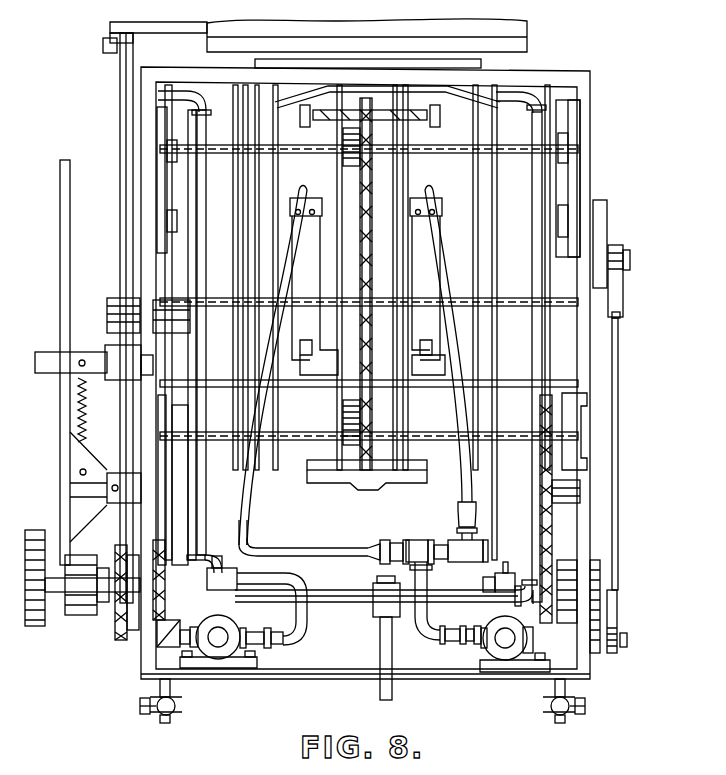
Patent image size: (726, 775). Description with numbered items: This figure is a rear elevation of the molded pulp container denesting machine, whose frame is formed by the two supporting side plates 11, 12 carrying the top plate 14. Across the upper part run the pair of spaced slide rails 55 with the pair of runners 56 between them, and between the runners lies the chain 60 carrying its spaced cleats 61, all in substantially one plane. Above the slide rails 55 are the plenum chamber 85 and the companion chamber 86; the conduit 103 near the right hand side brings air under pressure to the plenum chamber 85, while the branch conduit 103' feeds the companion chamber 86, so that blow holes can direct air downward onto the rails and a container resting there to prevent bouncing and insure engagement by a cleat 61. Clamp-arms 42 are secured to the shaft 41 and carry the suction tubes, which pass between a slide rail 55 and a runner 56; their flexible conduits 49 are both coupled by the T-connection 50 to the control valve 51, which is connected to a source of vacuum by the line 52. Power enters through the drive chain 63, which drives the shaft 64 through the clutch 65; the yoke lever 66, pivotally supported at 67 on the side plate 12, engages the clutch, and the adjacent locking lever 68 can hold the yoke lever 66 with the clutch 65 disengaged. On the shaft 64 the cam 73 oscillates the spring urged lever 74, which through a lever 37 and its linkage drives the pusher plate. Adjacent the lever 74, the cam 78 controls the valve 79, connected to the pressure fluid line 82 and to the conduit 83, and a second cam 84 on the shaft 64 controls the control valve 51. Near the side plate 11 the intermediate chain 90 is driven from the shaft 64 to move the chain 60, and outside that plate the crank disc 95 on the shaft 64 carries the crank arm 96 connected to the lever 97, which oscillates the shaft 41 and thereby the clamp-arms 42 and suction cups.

The top plate 14 is at (524, 82).
The lever 37 is at (122, 118).
The branch conduit 103' is at (387, 109).
The slide rails 55 is at (245, 186).
The shaft 41 is at (512, 225).
The chain 60 is at (366, 470).
The cleats 61 is at (324, 476).
The clamp-arm 42 is at (314, 312).
The runners 56 is at (318, 186).
The companion chamber 86 is at (230, 167).
The conduit 103 is at (535, 347).
The plenum chamber 85 is at (510, 170).
The lever 97 is at (606, 250).
The crank arm 96 is at (620, 462).
The crank disc 95 is at (612, 576).
The side plate 11 is at (582, 515).
The chain 90 is at (550, 540).
The yoke lever 66 is at (64, 425).
The locking lever 68 is at (42, 358).
The side plate 12 is at (145, 384).
The pivot 67 is at (115, 485).
The lever 74 is at (173, 518).
The cam 78 is at (226, 556).
The conduit 83 is at (253, 563).
The T-connection 50 is at (422, 540).
The flexible conduit 49 is at (244, 503).
The shaft 64 is at (343, 600).
The valve 79 is at (232, 608).
The control valve 51 is at (505, 668).
The cam 84 is at (508, 568).
The line 82 is at (172, 690).
The line 52 is at (558, 694).
The clutch 65 is at (110, 612).
The drive chain 63 is at (122, 638).
The cam 73 is at (156, 646).